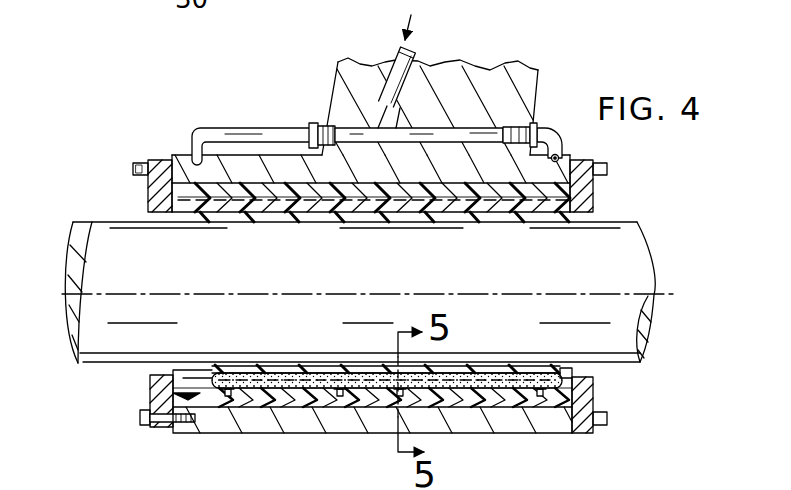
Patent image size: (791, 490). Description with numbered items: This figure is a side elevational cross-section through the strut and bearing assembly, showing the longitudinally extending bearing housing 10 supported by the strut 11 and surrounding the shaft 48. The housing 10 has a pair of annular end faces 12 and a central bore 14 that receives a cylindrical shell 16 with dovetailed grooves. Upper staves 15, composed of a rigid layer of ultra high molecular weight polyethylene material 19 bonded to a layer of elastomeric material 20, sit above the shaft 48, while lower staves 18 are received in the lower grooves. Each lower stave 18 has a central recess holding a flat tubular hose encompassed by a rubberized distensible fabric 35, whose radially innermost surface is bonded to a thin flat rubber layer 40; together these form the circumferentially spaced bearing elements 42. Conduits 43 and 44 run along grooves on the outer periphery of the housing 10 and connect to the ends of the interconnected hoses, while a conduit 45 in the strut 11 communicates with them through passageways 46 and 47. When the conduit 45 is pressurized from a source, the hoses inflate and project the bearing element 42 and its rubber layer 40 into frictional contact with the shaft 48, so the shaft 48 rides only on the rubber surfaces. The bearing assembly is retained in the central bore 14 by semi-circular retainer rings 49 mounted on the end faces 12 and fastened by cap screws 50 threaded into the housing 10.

The bearing housing 10 is at (470, 430).
The strut 11 is at (503, 80).
The annular end faces 12 is at (160, 157).
The central bore 14 is at (268, 190).
The staves 15 is at (478, 226).
The cylindrical shell 16 is at (450, 190).
The staves 18 is at (267, 397).
The ultra high molecular weight polyethylene material 19 is at (298, 207).
The elastomeric material 20 is at (375, 220).
The rubberized distensible fabric 35 is at (507, 375).
The rubber layer 40 is at (267, 365).
The bearing elements 42 is at (318, 368).
The conduit 43 is at (233, 132).
The conduit 44 is at (552, 138).
The conduit 45 is at (392, 50).
The passageway 46 is at (353, 123).
The passageway 47 is at (464, 68).
The shaft 48 is at (108, 340).
The semi-circular retainer rings 49 is at (157, 192).
The cap screws 50 is at (137, 422).